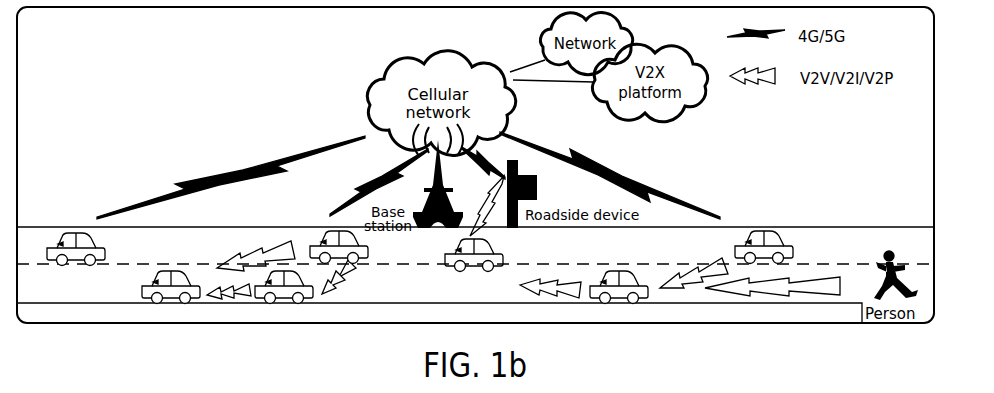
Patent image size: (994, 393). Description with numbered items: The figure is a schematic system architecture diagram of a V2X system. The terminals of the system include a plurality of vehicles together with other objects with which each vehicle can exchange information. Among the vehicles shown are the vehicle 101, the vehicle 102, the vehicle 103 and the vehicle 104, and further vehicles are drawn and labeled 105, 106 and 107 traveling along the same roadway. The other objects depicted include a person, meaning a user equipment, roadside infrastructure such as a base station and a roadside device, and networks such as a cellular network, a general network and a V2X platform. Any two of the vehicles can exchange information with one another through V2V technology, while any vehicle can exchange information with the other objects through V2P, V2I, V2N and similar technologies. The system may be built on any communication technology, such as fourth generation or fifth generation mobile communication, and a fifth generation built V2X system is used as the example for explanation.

The vehicle 101 is at (105, 250).
The vehicle 102 is at (140, 288).
The vehicle 103 is at (368, 250).
The vehicle 104 is at (257, 300).
The vehicle 105 is at (503, 255).
The vehicle 106 is at (637, 271).
The vehicle 107 is at (793, 248).